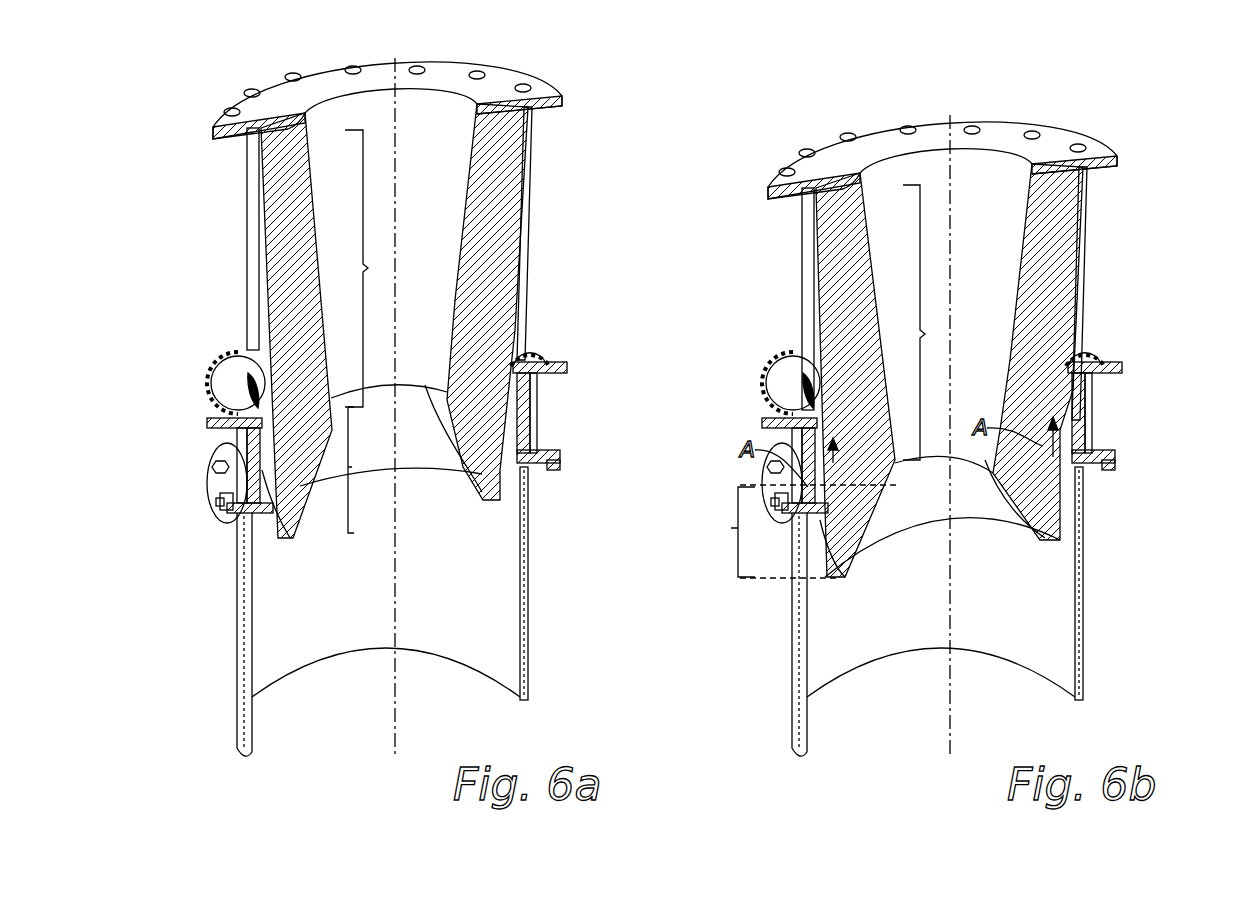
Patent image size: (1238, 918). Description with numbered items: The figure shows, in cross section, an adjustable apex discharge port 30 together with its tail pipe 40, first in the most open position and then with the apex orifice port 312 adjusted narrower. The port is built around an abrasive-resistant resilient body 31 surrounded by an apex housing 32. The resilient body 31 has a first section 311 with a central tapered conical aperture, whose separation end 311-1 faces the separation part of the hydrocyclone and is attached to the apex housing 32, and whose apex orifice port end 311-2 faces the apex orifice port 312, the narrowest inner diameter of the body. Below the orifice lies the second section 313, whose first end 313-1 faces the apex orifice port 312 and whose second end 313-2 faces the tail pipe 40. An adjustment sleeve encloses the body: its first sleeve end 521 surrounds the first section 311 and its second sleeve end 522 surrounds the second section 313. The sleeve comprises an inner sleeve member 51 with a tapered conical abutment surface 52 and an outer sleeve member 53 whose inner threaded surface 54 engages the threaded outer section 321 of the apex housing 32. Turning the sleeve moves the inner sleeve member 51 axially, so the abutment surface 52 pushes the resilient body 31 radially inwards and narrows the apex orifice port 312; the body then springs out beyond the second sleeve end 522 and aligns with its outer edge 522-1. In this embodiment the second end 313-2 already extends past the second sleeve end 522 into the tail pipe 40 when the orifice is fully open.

In FIG. 6a, the adjustable apex discharge port 30 is at (561, 177).
In FIG. 6b, the adjustable apex discharge port 30 is at (882, 216).
In FIG. 6a, the abrasive-resistant resilient body 31 is at (287, 216).
In FIG. 6b, the abrasive-resistant resilient body 31 is at (991, 370).
In FIG. 6a, the first section 311 is at (389, 268).
In FIG. 6b, the first section 311 is at (944, 329).
In FIG. 6a, the separation end 311-1 is at (313, 124).
In FIG. 6b, the separation end 311-1 is at (1013, 137).
In FIG. 6a, the apex orifice port end 311-2 is at (453, 480).
In FIG. 6b, the apex orifice port end 311-2 is at (998, 531).
In FIG. 6b, the apex orifice port 312 is at (779, 472).
In FIG. 6a, the second section 313 is at (352, 470).
In FIG. 6b, the second section 313 is at (757, 532).
In FIG. 6a, the first end 313-1 is at (432, 386).
In FIG. 6b, the first end 313-1 is at (956, 532).
In FIG. 6a, the second end 313-2 is at (492, 500).
In FIG. 6b, the second end 313-2 is at (856, 643).
In FIG. 6a, the apex housing 32 is at (257, 167).
In FIG. 6b, the apex housing 32 is at (978, 293).
In FIG. 6a, the threaded outer section 321 is at (225, 430).
In FIG. 6b, the threaded outer section 321 is at (1143, 360).
In FIG. 6a, the tail pipe 40 is at (528, 603).
In FIG. 6b, the tail pipe 40 is at (986, 583).
In FIG. 6a, the inner sleeve member 51 is at (258, 407).
In FIG. 6b, the inner sleeve member 51 is at (1124, 339).
In FIG. 6a, the tapered conical abutment surface 52 is at (522, 360).
In FIG. 6b, the tapered conical abutment surface 52 is at (767, 437).
In FIG. 6a, the first sleeve end 521 is at (257, 360).
In FIG. 6b, the first sleeve end 521 is at (986, 324).
In FIG. 6a, the second sleeve end 522 is at (253, 517).
In FIG. 6b, the second sleeve end 522 is at (1119, 486).
In FIG. 6a, the outer edge 522-1 is at (238, 592).
In FIG. 6b, the outer edge 522-1 is at (764, 631).
In FIG. 6a, the outer sleeve member 53 is at (247, 450).
In FIG. 6b, the outer sleeve member 53 is at (1128, 413).
In FIG. 6a, the inner threaded surface 54 is at (240, 494).